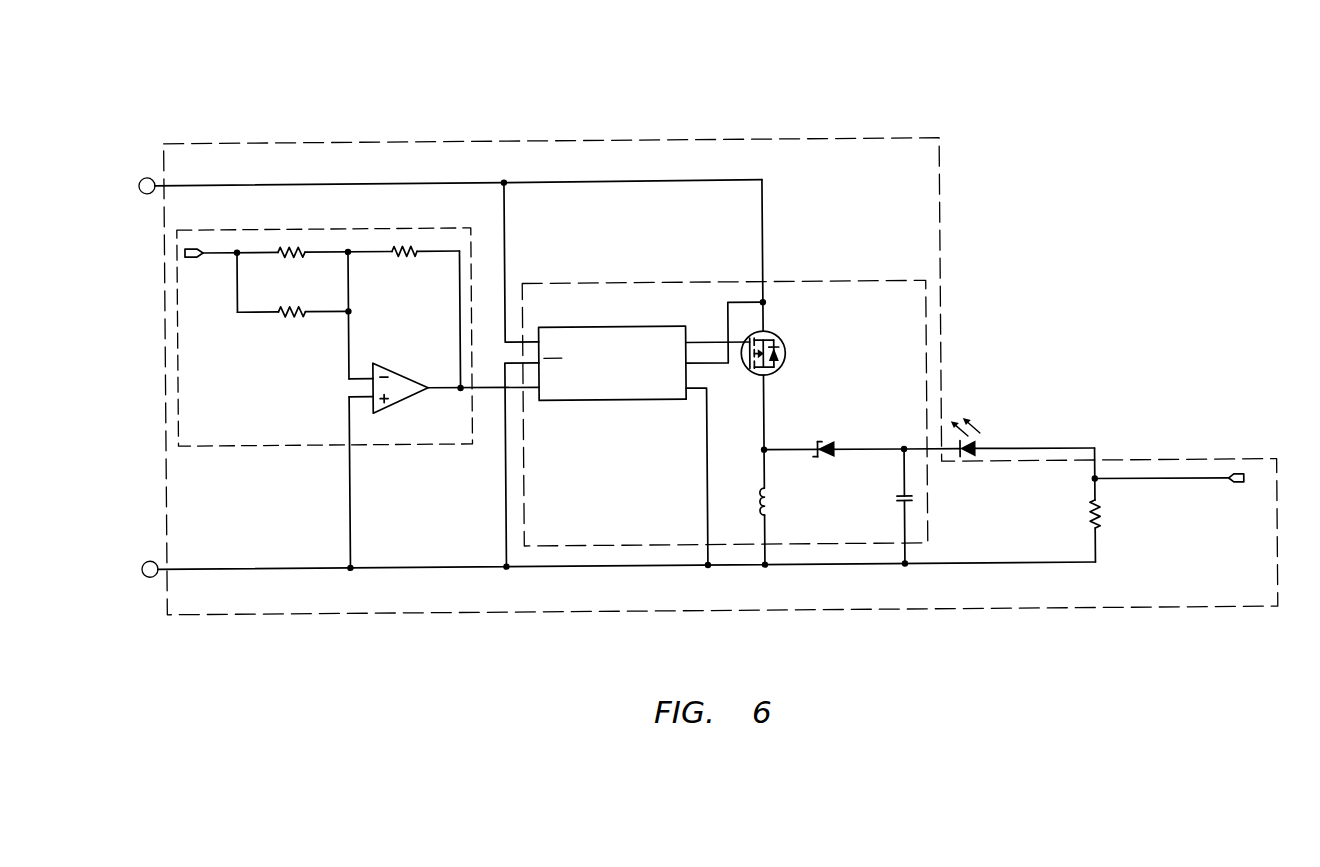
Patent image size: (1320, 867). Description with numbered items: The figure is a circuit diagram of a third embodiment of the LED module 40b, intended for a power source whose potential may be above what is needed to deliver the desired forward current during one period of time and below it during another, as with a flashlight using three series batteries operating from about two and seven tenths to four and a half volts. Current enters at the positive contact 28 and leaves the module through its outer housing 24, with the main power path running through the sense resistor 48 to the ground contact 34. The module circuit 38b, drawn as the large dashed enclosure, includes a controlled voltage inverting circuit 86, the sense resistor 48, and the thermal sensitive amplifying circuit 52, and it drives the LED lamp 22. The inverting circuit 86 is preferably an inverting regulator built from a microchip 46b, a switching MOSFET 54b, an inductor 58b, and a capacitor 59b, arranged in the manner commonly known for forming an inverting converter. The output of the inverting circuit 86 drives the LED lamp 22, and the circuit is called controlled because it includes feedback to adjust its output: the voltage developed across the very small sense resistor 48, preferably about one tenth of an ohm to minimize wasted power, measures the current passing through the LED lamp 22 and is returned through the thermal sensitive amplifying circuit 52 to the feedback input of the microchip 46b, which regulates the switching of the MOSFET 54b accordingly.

The LED module 40b is at (1018, 72).
The module circuit 38b is at (425, 138).
The positive contact 28 is at (148, 174).
The outer housing 24 is at (608, 604).
The ground contact 34 is at (148, 574).
The thermal sensitive amplifying circuit 52 is at (398, 444).
The controlled voltage inverting circuit 86 is at (867, 284).
The microchip 46b is at (622, 400).
The switching MOSFET 54b is at (786, 354).
The inductor 58b is at (758, 501).
The capacitor 59b is at (896, 500).
The LED lamp 22 is at (965, 463).
The sense resistor 48 is at (1099, 511).